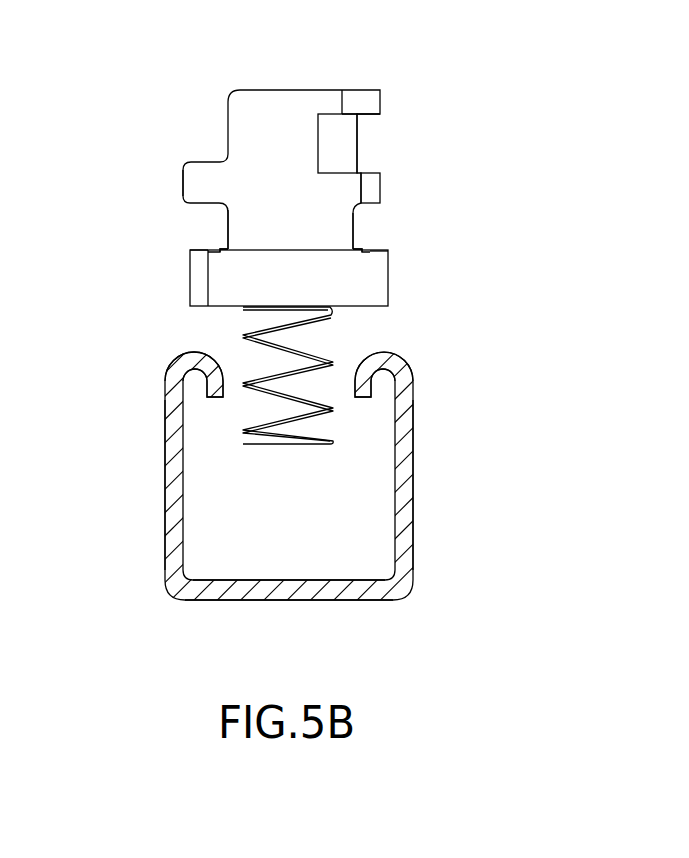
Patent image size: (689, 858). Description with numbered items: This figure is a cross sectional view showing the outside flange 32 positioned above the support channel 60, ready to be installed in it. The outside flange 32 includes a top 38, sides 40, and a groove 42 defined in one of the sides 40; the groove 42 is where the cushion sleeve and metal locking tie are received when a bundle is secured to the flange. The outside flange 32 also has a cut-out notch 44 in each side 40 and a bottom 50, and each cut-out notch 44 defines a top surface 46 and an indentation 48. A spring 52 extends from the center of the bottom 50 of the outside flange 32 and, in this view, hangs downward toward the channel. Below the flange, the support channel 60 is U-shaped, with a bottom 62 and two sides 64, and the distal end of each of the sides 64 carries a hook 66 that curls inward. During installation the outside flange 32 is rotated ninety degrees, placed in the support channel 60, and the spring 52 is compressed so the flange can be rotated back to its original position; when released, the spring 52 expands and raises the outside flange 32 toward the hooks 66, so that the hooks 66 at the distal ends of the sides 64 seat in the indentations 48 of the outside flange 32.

The outside flange 32 is at (313, 90).
The top 38 is at (280, 90).
The sides 40 is at (181, 174).
The groove 42 is at (358, 143).
The cut-out notches 44 is at (210, 218).
The top surface 46 is at (198, 245).
The indentation 48 is at (216, 248).
The bottom 50 is at (223, 308).
The spring 52 is at (307, 348).
The support channel 60 is at (412, 477).
The bottom 62 is at (358, 597).
The sides 64 is at (175, 478).
The hook 66 is at (177, 360).